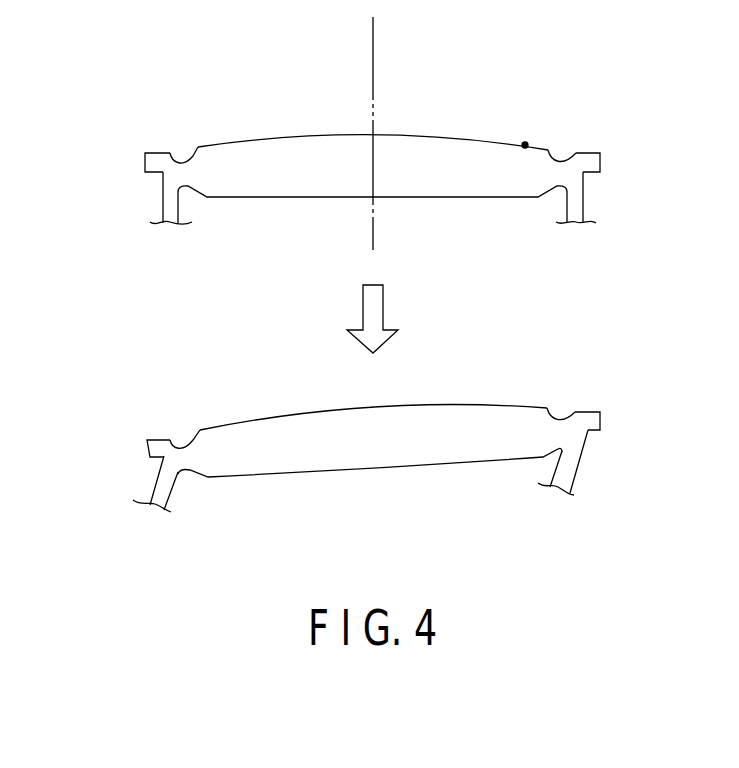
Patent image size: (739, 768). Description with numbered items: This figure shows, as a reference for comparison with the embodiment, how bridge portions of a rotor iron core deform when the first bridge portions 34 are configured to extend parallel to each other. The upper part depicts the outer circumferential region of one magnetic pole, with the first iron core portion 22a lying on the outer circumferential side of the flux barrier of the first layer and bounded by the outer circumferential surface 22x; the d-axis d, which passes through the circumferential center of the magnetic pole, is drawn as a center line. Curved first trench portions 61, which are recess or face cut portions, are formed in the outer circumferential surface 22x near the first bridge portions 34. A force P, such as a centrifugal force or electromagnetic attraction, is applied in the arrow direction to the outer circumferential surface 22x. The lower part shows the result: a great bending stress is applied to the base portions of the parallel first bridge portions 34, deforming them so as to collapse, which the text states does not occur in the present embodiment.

The first trench portion 61 is at (185, 158).
The first bridge portion 34 is at (170, 203).
The outer circumferential surface 22x is at (290, 137).
The first iron core portion 22a is at (424, 156).
The d-axis d is at (373, 58).
The force P is at (525, 145).